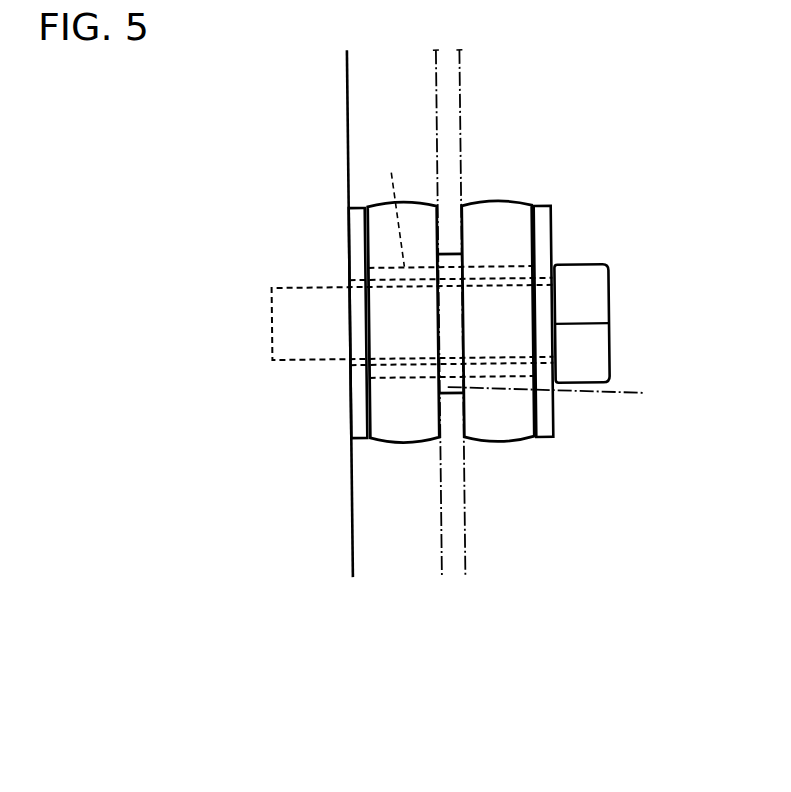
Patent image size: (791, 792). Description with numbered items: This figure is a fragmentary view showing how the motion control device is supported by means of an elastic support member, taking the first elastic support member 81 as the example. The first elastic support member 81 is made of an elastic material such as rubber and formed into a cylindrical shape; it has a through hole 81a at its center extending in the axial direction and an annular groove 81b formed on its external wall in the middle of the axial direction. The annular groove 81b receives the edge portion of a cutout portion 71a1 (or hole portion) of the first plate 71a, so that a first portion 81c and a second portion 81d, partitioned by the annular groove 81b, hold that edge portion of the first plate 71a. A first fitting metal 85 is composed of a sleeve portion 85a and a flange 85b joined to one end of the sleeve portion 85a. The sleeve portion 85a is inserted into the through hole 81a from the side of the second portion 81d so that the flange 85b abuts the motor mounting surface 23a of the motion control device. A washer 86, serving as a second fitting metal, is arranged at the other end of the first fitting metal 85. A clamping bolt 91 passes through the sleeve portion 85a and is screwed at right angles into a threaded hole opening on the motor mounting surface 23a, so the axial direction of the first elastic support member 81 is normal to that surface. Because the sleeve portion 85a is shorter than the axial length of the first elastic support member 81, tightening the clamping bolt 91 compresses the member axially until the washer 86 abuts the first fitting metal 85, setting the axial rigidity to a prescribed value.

The motor mounting surface 23a is at (343, 63).
The first plate 71a is at (463, 85).
The cutout portion 71a1 is at (576, 395).
The first elastic support member 81 is at (501, 316).
The through hole 81a is at (498, 270).
The annular groove 81b is at (453, 220).
The first portion 81c is at (505, 444).
The second portion 81d is at (397, 442).
The first fitting metal 85 is at (340, 291).
The sleeve portion 85a is at (389, 204).
The flange 85b is at (354, 218).
The washer 86 is at (542, 404).
The clamping bolt 91 is at (597, 297).